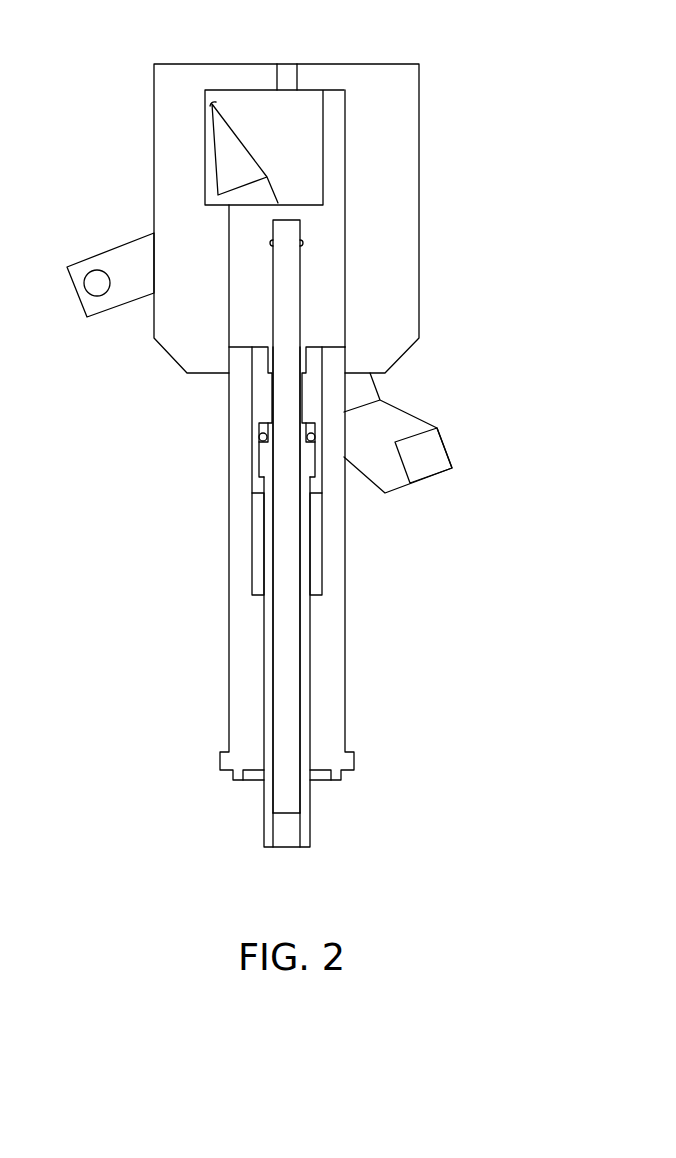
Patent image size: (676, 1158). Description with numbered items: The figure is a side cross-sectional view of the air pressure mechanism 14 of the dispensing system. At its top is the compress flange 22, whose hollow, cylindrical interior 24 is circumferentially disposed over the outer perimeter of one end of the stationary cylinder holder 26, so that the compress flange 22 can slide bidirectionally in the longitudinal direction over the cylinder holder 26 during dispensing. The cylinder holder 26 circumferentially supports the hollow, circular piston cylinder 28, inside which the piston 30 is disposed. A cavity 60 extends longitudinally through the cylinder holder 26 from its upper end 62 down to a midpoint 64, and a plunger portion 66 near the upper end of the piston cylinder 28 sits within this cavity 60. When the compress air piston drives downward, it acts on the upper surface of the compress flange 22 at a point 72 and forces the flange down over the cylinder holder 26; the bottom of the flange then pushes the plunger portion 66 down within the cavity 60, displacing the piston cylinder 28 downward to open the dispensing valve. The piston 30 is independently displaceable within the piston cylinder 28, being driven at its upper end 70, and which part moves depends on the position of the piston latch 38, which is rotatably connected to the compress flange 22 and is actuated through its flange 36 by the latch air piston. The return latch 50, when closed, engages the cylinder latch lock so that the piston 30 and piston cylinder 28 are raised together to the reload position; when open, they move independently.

The air pressure mechanism 14 is at (533, 93).
The compress flange 22 is at (407, 317).
The hollow, cylindrical interior 24 is at (322, 222).
The cylinder holder 26 is at (330, 642).
The piston cylinder 28 is at (237, 835).
The piston 30 is at (282, 682).
The flange 36 is at (102, 250).
The piston latch 38 is at (233, 157).
The return latch 50 is at (437, 457).
The cavity 60 is at (317, 535).
The upper end 62 is at (240, 362).
The midpoint 64 is at (242, 594).
The plunger portion 66 is at (252, 487).
The upper end 70 is at (286, 232).
The point 72 is at (286, 63).